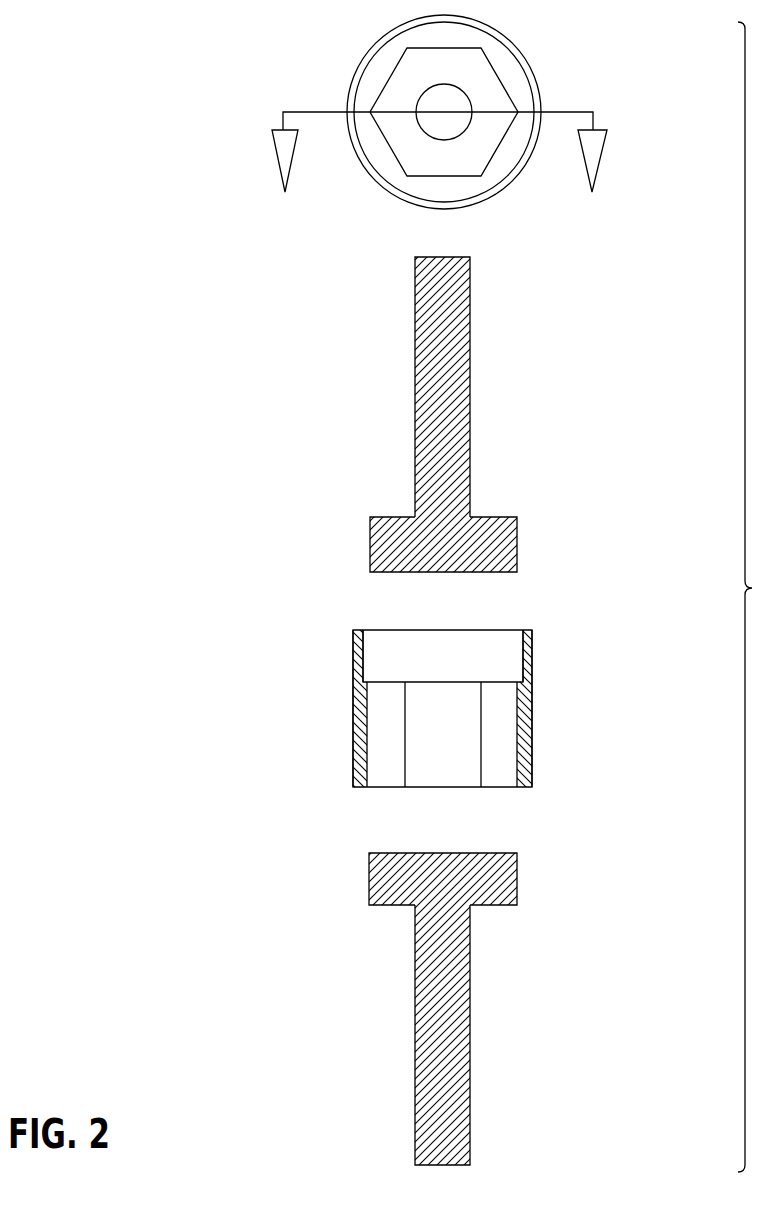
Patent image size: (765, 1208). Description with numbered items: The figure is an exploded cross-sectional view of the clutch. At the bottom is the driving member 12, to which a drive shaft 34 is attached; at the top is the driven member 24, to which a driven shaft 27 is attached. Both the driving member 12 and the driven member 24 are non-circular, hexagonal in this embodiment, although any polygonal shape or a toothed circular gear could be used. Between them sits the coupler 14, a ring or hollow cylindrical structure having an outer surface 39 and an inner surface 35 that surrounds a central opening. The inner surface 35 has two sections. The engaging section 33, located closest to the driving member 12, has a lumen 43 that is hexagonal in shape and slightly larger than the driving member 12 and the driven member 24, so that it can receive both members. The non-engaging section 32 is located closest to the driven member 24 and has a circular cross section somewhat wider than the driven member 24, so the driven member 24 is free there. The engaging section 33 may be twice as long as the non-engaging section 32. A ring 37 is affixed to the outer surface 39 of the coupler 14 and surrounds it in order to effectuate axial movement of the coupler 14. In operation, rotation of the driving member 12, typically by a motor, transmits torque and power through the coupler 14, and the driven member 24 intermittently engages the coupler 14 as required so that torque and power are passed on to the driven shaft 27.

The driving member 12 is at (517, 880).
The coupler 14 is at (454, 688).
The driven member 24 is at (517, 533).
The driven shaft 27 is at (470, 427).
The non-engaging section 32 is at (258, 628).
The engaging section 33 is at (258, 682).
The drive shaft 34 is at (470, 945).
The inner surface 35 is at (503, 652).
The ring 37 is at (351, 707).
The outer surface 39 is at (353, 668).
The lumen 43 is at (497, 782).